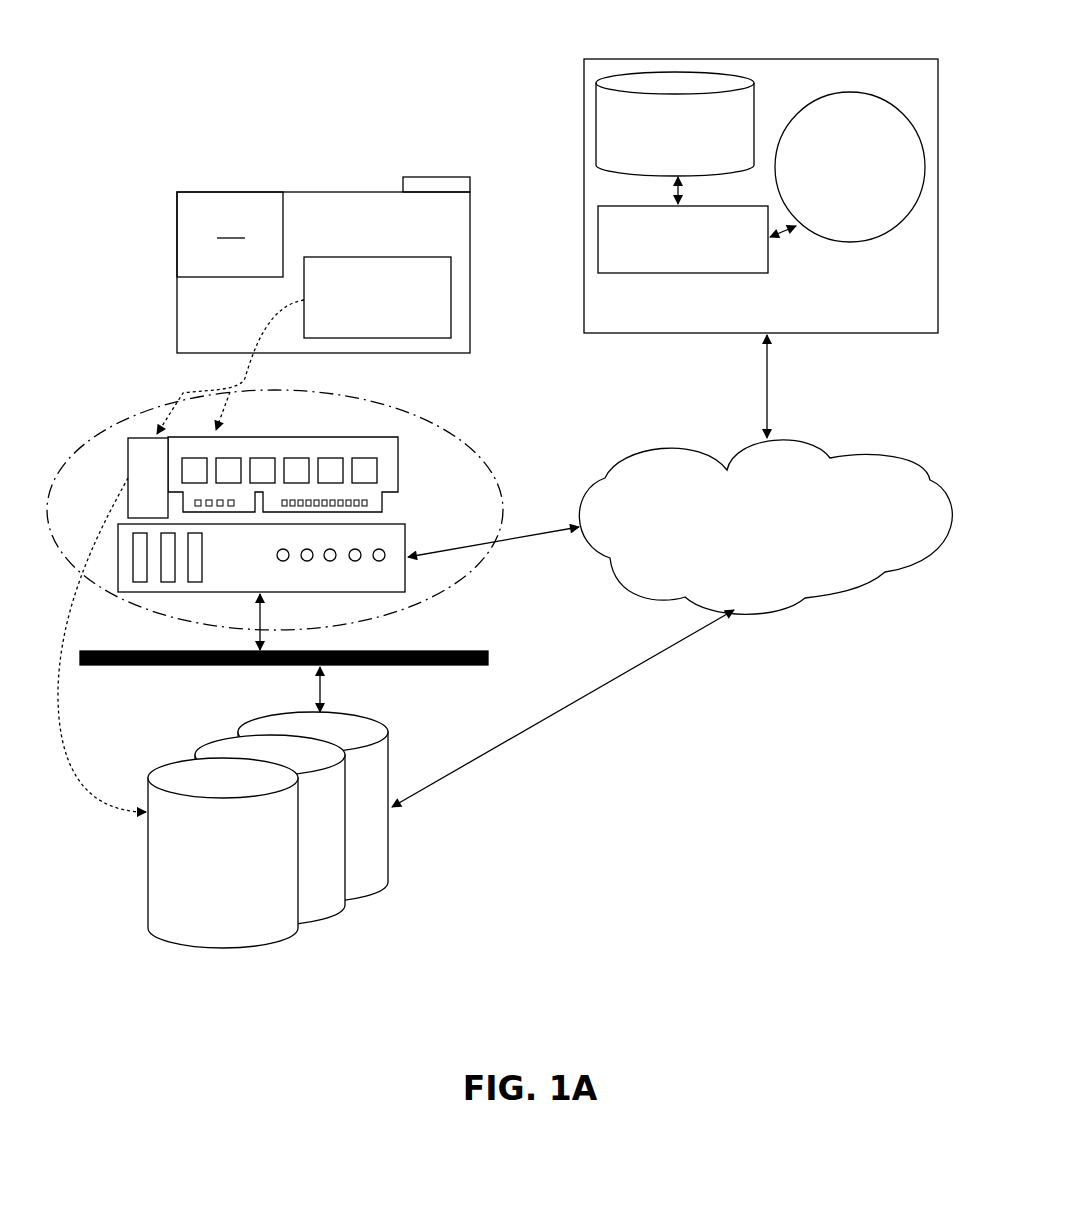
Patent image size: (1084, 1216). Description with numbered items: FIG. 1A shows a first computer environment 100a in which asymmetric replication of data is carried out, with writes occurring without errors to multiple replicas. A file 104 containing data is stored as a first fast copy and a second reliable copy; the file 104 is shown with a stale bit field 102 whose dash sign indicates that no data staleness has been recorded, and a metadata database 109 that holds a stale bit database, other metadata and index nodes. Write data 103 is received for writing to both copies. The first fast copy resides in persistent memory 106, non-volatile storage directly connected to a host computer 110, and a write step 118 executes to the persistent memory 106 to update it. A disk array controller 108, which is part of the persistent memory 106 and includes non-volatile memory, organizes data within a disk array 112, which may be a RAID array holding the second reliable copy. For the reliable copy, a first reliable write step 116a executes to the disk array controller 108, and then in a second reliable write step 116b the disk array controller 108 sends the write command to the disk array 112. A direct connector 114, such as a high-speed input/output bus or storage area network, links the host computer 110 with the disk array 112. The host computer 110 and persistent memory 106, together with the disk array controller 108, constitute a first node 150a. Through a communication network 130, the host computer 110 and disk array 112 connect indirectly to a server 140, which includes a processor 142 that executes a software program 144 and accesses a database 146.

The first computer environment 100a is at (130, 70).
The stale bit field 102 is at (197, 192).
The write data 103 is at (377, 297).
The file 104 is at (367, 192).
The persistent memory 106 is at (384, 442).
The disk array controller 108 is at (143, 437).
The metadata database 109 is at (437, 182).
The host computer 110 is at (400, 542).
The disk array 112 is at (212, 727).
The direct connector 114 is at (440, 648).
The first reliable write step 116a is at (180, 400).
The second reliable write step 116b is at (77, 588).
The write step 118 is at (222, 400).
The communication network 130 is at (765, 527).
The server 140 is at (761, 196).
The processor 142 is at (683, 239).
The software program 144 is at (850, 167).
The database 146 is at (675, 124).
The first node 150a is at (470, 447).